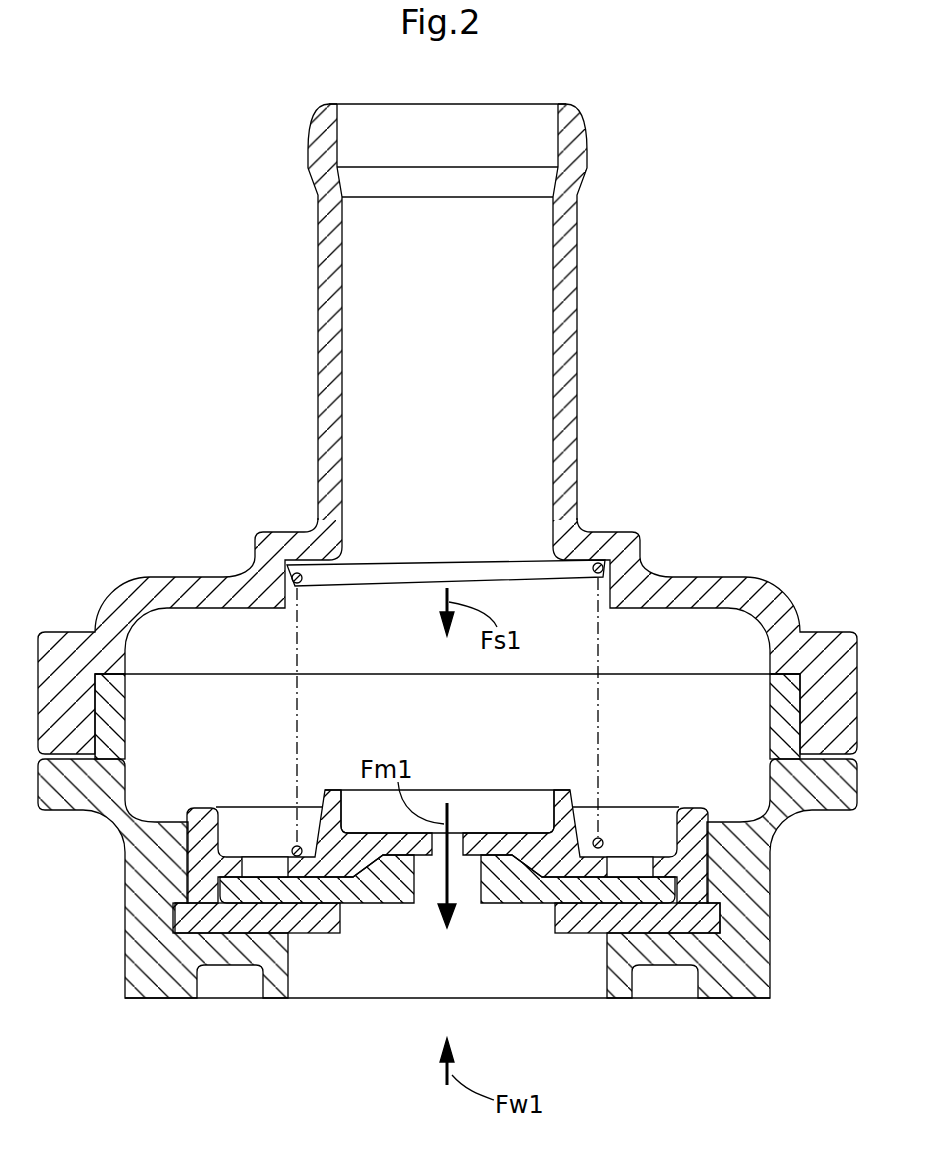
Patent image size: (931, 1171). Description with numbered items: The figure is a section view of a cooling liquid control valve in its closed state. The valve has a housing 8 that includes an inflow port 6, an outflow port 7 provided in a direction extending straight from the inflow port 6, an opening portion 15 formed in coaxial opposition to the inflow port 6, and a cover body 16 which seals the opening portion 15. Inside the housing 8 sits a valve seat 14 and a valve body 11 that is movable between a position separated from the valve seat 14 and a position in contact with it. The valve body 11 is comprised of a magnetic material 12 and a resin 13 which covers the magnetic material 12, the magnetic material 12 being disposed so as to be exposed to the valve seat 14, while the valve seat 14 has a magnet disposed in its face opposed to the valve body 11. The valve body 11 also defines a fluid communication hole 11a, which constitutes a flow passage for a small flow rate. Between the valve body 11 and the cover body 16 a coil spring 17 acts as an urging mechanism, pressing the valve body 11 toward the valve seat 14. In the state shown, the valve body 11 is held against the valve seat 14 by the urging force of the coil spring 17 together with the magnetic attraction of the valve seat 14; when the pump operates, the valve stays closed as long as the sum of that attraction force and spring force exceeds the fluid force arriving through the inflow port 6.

The inflow port 6 is at (447, 917).
The outflow port 7 is at (553, 264).
The housing 8 is at (53, 800).
The valve body 11 is at (447, 844).
The fluid communication hole 11a is at (452, 830).
The magnetic material 12 is at (550, 898).
The resin 13 is at (447, 806).
The valve seat 14 is at (338, 900).
The opening portion 15 is at (177, 618).
The cover body 16 is at (713, 588).
The coil spring 17 is at (600, 728).